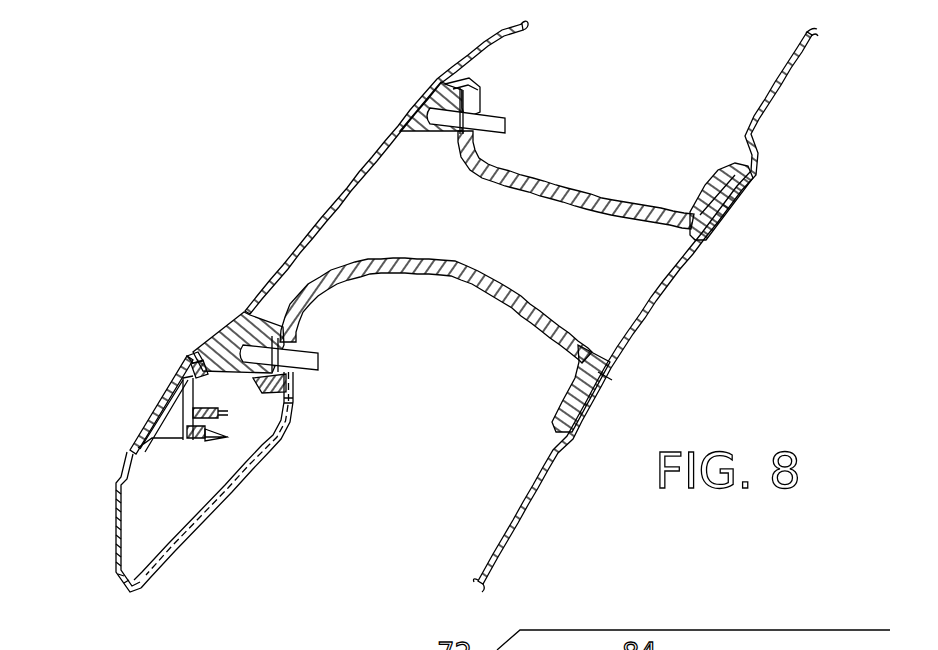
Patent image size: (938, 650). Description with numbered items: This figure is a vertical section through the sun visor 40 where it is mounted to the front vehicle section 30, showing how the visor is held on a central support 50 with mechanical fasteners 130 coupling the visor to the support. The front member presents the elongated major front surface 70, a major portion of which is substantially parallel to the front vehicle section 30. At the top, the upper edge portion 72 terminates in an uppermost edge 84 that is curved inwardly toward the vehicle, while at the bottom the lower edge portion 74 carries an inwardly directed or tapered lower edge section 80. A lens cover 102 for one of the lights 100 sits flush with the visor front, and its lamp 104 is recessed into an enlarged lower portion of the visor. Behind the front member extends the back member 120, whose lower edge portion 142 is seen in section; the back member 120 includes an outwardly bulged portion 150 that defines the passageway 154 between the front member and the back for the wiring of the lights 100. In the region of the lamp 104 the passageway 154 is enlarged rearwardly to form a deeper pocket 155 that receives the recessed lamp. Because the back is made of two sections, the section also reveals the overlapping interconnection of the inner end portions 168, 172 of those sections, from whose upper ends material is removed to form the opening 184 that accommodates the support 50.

The front vehicle section 30 is at (776, 86).
The sun visor 40 is at (413, 158).
The central support 50 is at (484, 293).
The major front surface 70 is at (307, 227).
The upper edge portion 72 is at (413, 158).
The lower edge portion 74 is at (101, 540).
The lower edge section 80 is at (107, 565).
The uppermost edge 84 is at (528, 32).
The lights 100 is at (127, 500).
The lens cover 102 is at (156, 396).
The lamp 104 is at (165, 425).
The back member 120 is at (262, 480).
The mechanical fasteners 130 is at (499, 134).
The lower edge portion 142 is at (131, 589).
The outwardly bulged portion 150 is at (242, 493).
The passageway 154 is at (131, 569).
The pocket 155 is at (223, 476).
The inner end portion 168 is at (298, 433).
The inner end portion 172 is at (270, 467).
The opening 184 is at (297, 401).